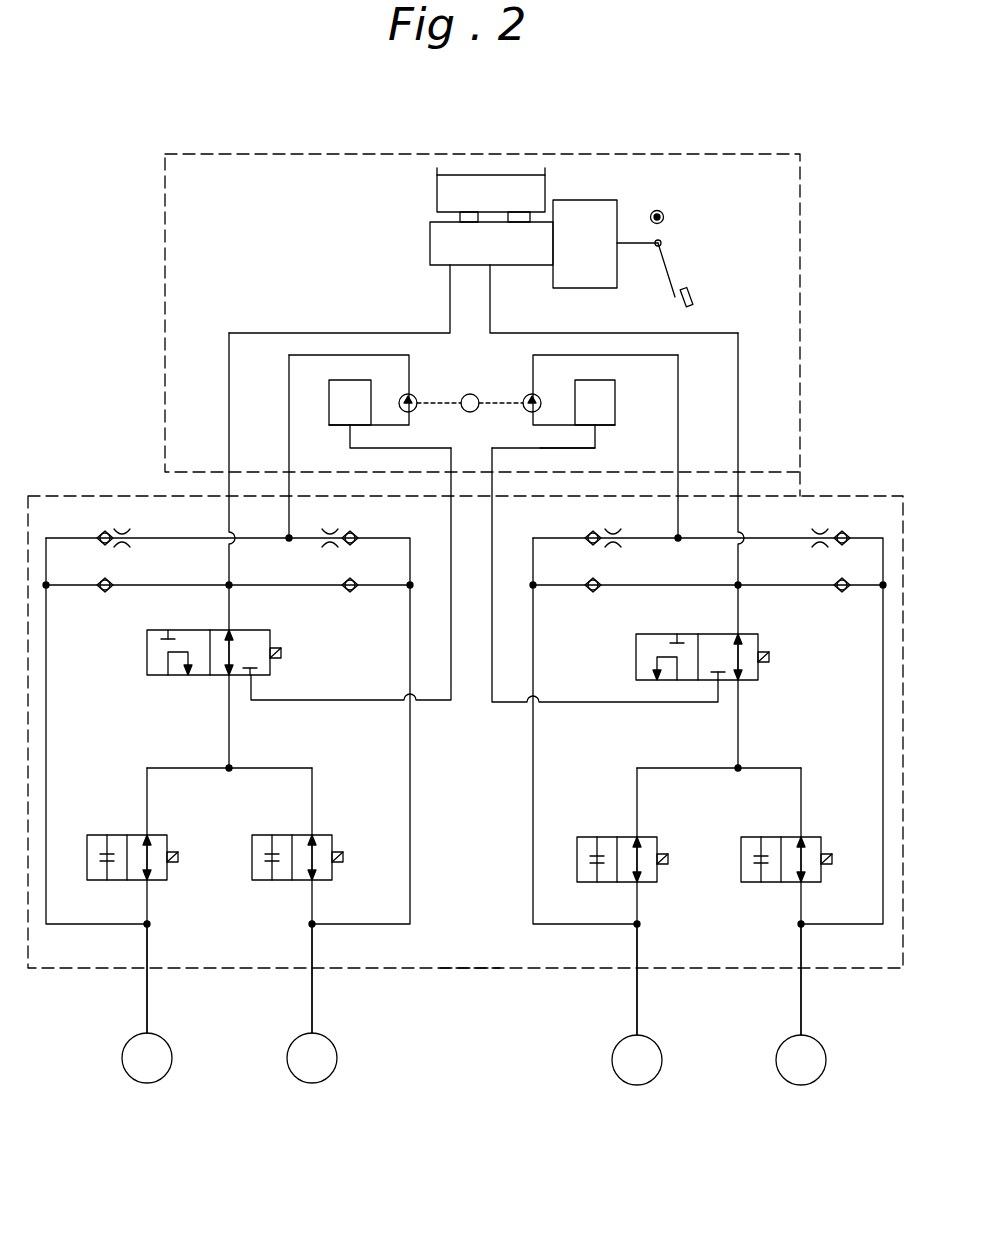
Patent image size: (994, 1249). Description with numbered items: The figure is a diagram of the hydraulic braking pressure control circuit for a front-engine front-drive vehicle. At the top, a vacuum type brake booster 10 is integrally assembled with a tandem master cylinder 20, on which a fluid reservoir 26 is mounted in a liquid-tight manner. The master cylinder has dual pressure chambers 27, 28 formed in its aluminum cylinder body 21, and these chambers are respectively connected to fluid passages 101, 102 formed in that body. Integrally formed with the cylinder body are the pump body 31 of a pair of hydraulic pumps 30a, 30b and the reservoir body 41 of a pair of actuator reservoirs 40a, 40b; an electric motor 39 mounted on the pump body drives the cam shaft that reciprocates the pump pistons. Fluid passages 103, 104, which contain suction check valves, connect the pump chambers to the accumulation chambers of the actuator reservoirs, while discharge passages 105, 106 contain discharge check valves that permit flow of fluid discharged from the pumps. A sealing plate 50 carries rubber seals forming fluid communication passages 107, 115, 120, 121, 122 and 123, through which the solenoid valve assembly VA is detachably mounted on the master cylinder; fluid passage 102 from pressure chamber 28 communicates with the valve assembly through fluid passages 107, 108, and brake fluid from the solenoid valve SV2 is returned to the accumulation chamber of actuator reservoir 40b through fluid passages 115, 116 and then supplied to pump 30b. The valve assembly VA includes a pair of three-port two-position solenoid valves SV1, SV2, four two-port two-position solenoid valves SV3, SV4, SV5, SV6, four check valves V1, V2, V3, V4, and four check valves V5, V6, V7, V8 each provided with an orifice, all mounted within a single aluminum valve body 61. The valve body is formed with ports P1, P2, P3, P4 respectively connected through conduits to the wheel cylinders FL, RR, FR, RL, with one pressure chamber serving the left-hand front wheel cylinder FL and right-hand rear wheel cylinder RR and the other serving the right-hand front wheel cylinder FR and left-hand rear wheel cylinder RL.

The brake booster 10 is at (588, 200).
The tandem master cylinder 20 is at (424, 234).
The fluid reservoir 26 is at (435, 194).
The pressure chamber 27 is at (440, 250).
The pressure chamber 28 is at (498, 248).
The fluid passage 101 is at (450, 313).
The fluid passage 102 is at (490, 312).
The cylinder body 21 is at (422, 325).
The pump body 31 is at (422, 325).
The reservoir body 41 is at (164, 430).
The sealing plate 50 is at (165, 478).
The hydraulic pump 30a is at (412, 394).
The hydraulic pump 30b is at (529, 394).
The electric motor 39 is at (482, 396).
The actuator reservoir 40a is at (329, 408).
The actuator reservoir 40b is at (615, 403).
The fluid passage 103 is at (390, 427).
The fluid passage 104 is at (558, 427).
The discharge passage 105 is at (410, 375).
The discharge passage 106 is at (533, 372).
The fluid passage 107 is at (738, 485).
The fluid passage 108 is at (740, 450).
The fluid passage 115 is at (492, 486).
The fluid passage 116 is at (560, 448).
The fluid communication passage 120 is at (678, 483).
The fluid communication passage 121 is at (290, 478).
The fluid communication passage 122 is at (228, 486).
The fluid communication passage 123 is at (452, 486).
The solenoid valve assembly VA is at (822, 494).
The valve body 61 is at (470, 955).
The check valve V1 is at (112, 580).
The check valve V2 is at (354, 578).
The check valve V3 is at (598, 580).
The check valve V4 is at (850, 566).
The check valve with orifice V5 is at (122, 532).
The check valve with orifice V6 is at (345, 532).
The check valve with orifice V7 is at (622, 532).
The check valve with orifice V8 is at (838, 532).
The solenoid valve SV1 is at (270, 638).
The solenoid valve SV2 is at (758, 640).
The solenoid valve SV3 is at (158, 835).
The solenoid valve SV4 is at (322, 835).
The solenoid valve SV5 is at (648, 837).
The solenoid valve SV6 is at (811, 837).
The port P1 is at (147, 968).
The port P2 is at (312, 968).
The port P3 is at (637, 970).
The port P4 is at (801, 970).
The wheel cylinder FL is at (147, 1058).
The wheel cylinder RR is at (312, 1058).
The wheel cylinder FR is at (637, 1060).
The wheel cylinder RL is at (801, 1060).